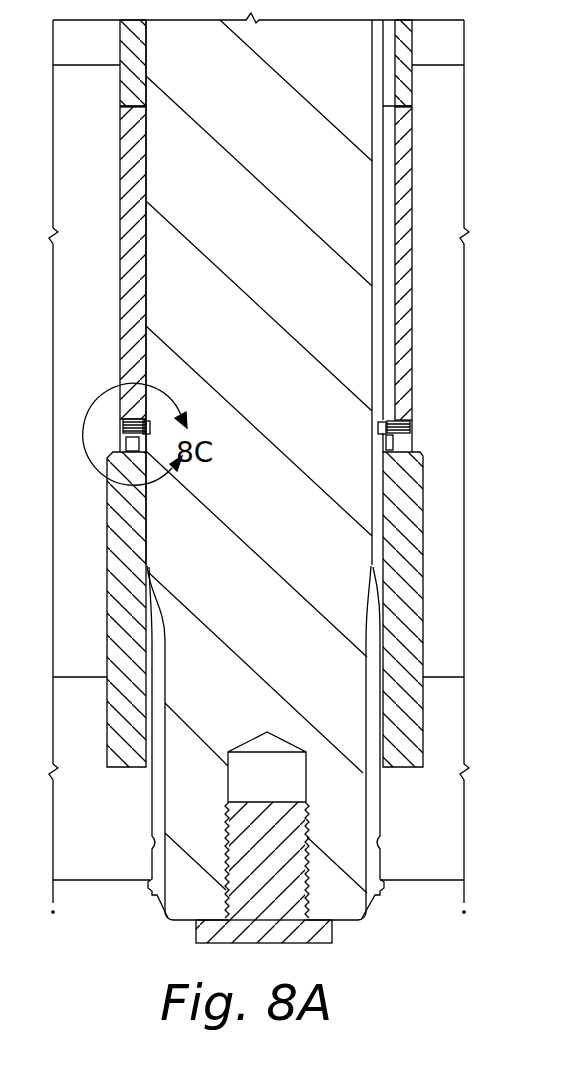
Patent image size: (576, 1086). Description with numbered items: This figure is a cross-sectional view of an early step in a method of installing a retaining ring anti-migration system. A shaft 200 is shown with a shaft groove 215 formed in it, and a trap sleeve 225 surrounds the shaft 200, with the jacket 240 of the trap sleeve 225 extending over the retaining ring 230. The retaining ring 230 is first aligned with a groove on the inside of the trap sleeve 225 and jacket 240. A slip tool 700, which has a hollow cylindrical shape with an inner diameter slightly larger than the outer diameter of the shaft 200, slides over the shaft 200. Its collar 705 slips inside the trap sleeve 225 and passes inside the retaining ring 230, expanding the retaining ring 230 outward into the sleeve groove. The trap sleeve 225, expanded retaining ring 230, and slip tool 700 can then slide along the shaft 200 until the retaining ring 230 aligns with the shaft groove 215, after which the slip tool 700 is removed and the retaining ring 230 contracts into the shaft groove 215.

The shaft 200 is at (278, 250).
The shaft groove 215 is at (150, 424).
The trap sleeve 225 is at (402, 343).
The retaining ring 230 is at (400, 418).
The jacket 240 is at (399, 441).
The slip tool 700 is at (405, 563).
The collar 705 is at (123, 439).